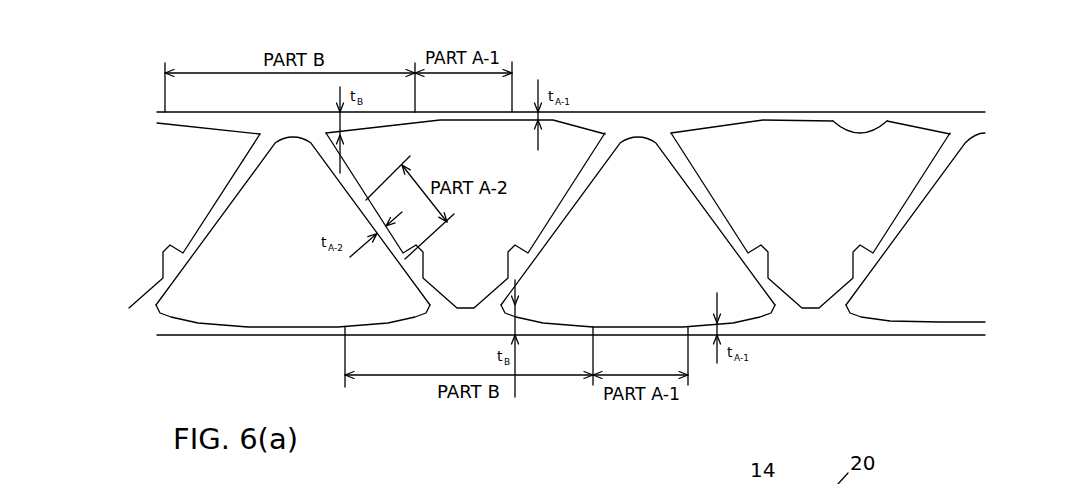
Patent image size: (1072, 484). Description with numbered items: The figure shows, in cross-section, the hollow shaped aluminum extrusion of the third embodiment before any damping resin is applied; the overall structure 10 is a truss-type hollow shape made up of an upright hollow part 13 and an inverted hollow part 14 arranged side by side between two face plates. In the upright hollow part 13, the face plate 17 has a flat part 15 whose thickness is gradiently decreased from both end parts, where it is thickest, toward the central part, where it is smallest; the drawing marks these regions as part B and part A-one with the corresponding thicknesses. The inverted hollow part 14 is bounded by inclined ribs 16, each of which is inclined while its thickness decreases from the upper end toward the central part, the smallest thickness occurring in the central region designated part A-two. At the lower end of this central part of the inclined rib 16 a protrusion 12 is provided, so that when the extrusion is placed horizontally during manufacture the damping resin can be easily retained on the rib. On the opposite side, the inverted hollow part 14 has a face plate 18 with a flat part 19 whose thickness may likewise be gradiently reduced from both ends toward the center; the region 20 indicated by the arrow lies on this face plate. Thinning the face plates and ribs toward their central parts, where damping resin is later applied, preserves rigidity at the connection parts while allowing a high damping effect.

The hollow structure board 10 is at (580, 483).
The protrusion 12 is at (502, 251).
The upright hollow part 13 is at (693, 260).
The inverted hollow part 14 is at (797, 173).
The flat part 15 is at (633, 323).
The inclined rib 16 is at (333, 180).
The face plate 17 is at (807, 335).
The face plate 18 is at (640, 111).
The flat part 19 is at (881, 126).
The joint region 20 is at (817, 87).